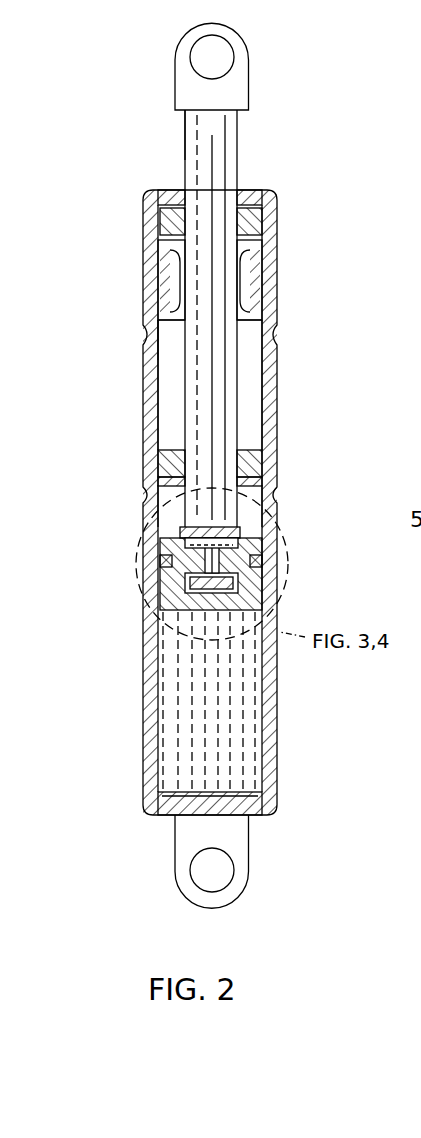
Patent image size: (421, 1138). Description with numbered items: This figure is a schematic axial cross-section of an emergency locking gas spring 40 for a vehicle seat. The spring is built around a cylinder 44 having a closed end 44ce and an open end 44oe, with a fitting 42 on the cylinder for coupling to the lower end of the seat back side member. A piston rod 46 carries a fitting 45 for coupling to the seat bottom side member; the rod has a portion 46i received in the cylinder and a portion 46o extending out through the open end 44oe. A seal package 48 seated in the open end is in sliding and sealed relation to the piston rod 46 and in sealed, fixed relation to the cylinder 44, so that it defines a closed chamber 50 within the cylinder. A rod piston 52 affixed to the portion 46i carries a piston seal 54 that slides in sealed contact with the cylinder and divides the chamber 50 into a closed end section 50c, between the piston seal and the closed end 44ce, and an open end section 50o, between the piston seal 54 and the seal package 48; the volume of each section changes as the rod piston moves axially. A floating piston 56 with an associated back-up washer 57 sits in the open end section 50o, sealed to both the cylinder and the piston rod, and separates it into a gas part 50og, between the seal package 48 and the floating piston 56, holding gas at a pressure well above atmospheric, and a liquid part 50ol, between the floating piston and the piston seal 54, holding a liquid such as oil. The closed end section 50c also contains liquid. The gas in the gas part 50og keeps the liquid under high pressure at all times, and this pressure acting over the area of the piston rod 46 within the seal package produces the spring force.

The emergency locking gas spring 40 is at (107, 250).
The fitting 42 is at (250, 845).
The cylinder 44 is at (278, 690).
The open end 44oe is at (263, 185).
The closed end 44ce is at (255, 810).
The fitting 45 is at (245, 72).
The piston rod 46 is at (238, 150).
The portion of the piston rod extending out of the cylinder 46o is at (185, 148).
The portion of the piston rod received in the cylinder 46i is at (232, 425).
The seal package 48 is at (306, 205).
The closed chamber 50 is at (160, 385).
The gas part 50og is at (150, 355).
The open end section 50o is at (265, 360).
The liquid part 50ol is at (160, 490).
The closed end section 50c is at (240, 752).
The rod piston 52 is at (262, 585).
The piston seal 54 is at (165, 560).
The floating piston 56 is at (270, 462).
The back-up washer 57 is at (275, 480).